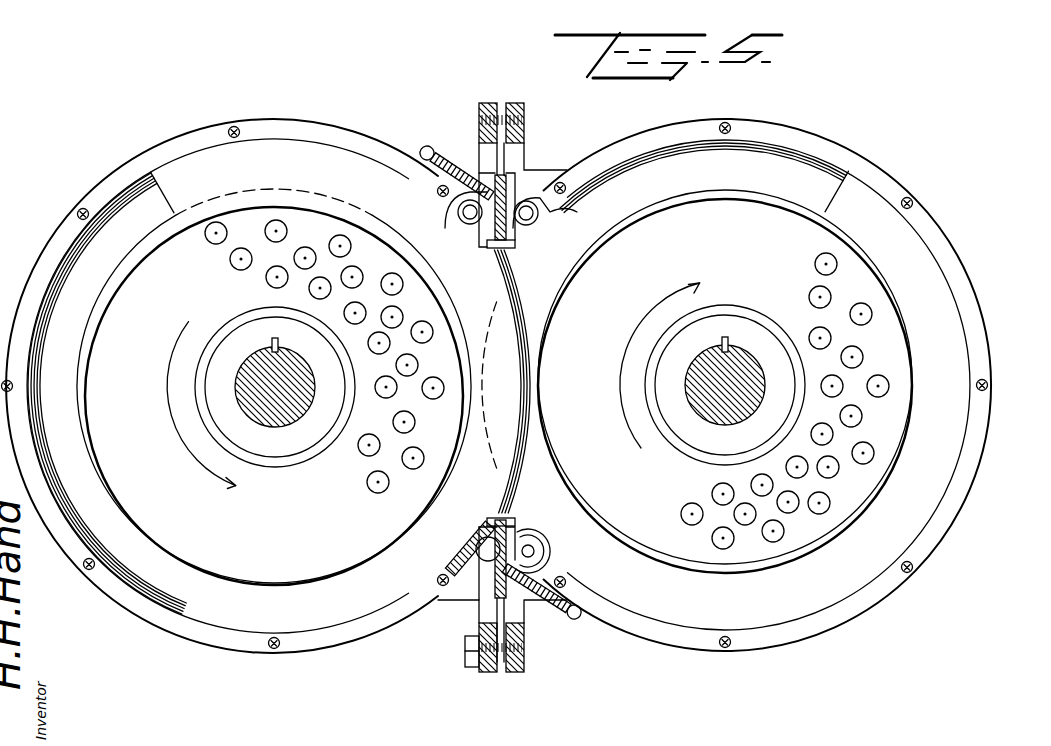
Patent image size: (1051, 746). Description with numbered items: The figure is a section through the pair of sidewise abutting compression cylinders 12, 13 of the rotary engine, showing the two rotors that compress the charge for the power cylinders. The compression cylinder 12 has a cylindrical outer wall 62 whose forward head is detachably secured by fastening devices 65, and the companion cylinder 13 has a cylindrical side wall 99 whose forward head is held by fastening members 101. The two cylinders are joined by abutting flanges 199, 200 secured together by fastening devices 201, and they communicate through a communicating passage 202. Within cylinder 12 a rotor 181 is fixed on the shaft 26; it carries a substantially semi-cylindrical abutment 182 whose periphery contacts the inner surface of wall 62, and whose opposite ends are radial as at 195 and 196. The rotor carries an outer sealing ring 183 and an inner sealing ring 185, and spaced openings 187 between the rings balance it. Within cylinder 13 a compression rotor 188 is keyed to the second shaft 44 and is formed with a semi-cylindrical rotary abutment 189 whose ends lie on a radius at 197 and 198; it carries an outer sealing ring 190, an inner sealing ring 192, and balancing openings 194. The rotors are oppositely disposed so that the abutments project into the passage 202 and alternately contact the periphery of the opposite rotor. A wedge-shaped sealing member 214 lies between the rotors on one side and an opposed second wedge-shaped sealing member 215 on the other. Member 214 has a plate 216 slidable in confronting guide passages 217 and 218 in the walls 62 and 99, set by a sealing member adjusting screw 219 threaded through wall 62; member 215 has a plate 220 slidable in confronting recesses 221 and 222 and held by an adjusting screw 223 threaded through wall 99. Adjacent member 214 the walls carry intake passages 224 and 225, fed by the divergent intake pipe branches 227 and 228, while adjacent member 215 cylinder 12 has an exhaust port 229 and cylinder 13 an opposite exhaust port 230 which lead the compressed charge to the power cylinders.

The compression cylinder 12 is at (358, 634).
The compression cylinder 13 is at (713, 662).
The shaft 26 is at (302, 413).
The second shaft 44 is at (717, 413).
The cylindrical outer wall 62 is at (223, 142).
The fastening devices 65 is at (275, 650).
The cylindrical side wall 99 is at (957, 530).
The fastening members 101 is at (731, 650).
The rotor 181 is at (228, 560).
The semi-cylindrical abutment 182 is at (331, 160).
The outer sealing ring 183 is at (292, 580).
The inner sealing ring 185 is at (285, 458).
The openings 187 is at (376, 478).
The compression rotor 188 is at (676, 563).
The rotary abutment 189 is at (947, 470).
The outer sealing ring 190 is at (754, 200).
The inner sealing ring 192 is at (740, 315).
The openings or recesses 194 is at (713, 493).
The radial abutment end 195 is at (460, 562).
The radial abutment end 196 is at (160, 196).
The abutment end 197 is at (612, 560).
The abutment end 198 is at (840, 195).
The abutting flange 199 is at (478, 613).
The abutting flange 200 is at (528, 637).
The fastening devices 201 is at (467, 660).
The communicating passage 202 is at (532, 534).
The wedge-shaped sealing member 214 is at (502, 257).
The second wedge-shaped sealing member 215 is at (507, 520).
The plate 216 is at (503, 190).
The recess or guide passage 217 is at (488, 232).
The recess or guide passage 218 is at (514, 250).
The sealing member adjusting screw 219 is at (436, 150).
The plate 220 is at (447, 525).
The recess or guide passage 221 is at (478, 540).
The recess or guide passage 222 is at (512, 553).
The adjusting screw 223 is at (560, 608).
The intake passage 224 is at (447, 203).
The intake passage 225 is at (567, 206).
The intake pipe branch 227 is at (459, 214).
The intake pipe branch 228 is at (538, 222).
The exhaust port 229 is at (462, 565).
The exhaust port 230 is at (545, 565).